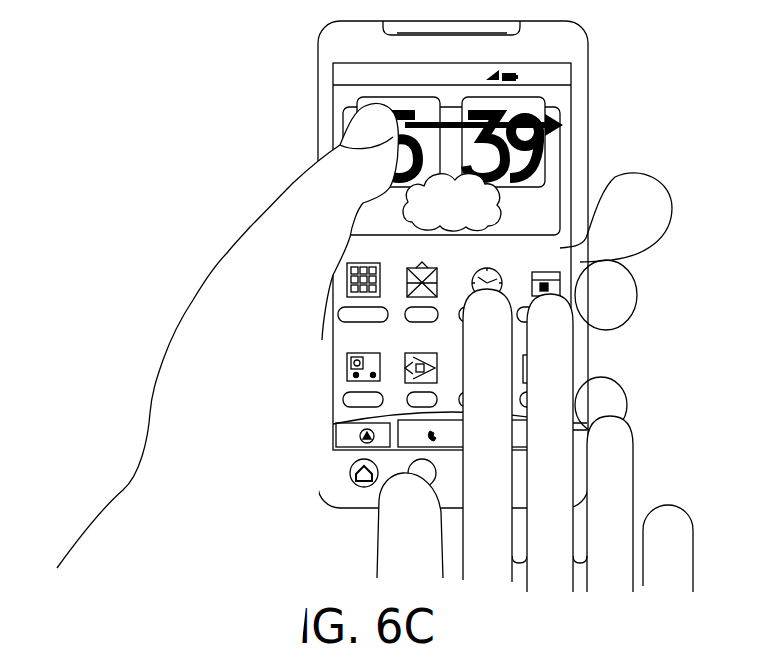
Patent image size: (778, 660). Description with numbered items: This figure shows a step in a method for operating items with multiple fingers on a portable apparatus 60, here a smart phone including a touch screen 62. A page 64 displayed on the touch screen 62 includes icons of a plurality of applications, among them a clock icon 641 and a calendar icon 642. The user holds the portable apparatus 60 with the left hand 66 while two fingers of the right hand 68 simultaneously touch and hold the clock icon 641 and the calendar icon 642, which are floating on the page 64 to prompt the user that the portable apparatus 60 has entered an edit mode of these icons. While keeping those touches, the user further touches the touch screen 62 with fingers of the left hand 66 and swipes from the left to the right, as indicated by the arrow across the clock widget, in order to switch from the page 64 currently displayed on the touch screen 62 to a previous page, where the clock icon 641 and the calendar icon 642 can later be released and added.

The portable apparatus 60 is at (584, 30).
The touch screen 62 is at (573, 117).
The page 64 is at (588, 197).
The left hand 66 is at (200, 377).
The right hand 68 is at (560, 541).
The clock icon 641 is at (484, 270).
The calendar icon 642 is at (545, 271).